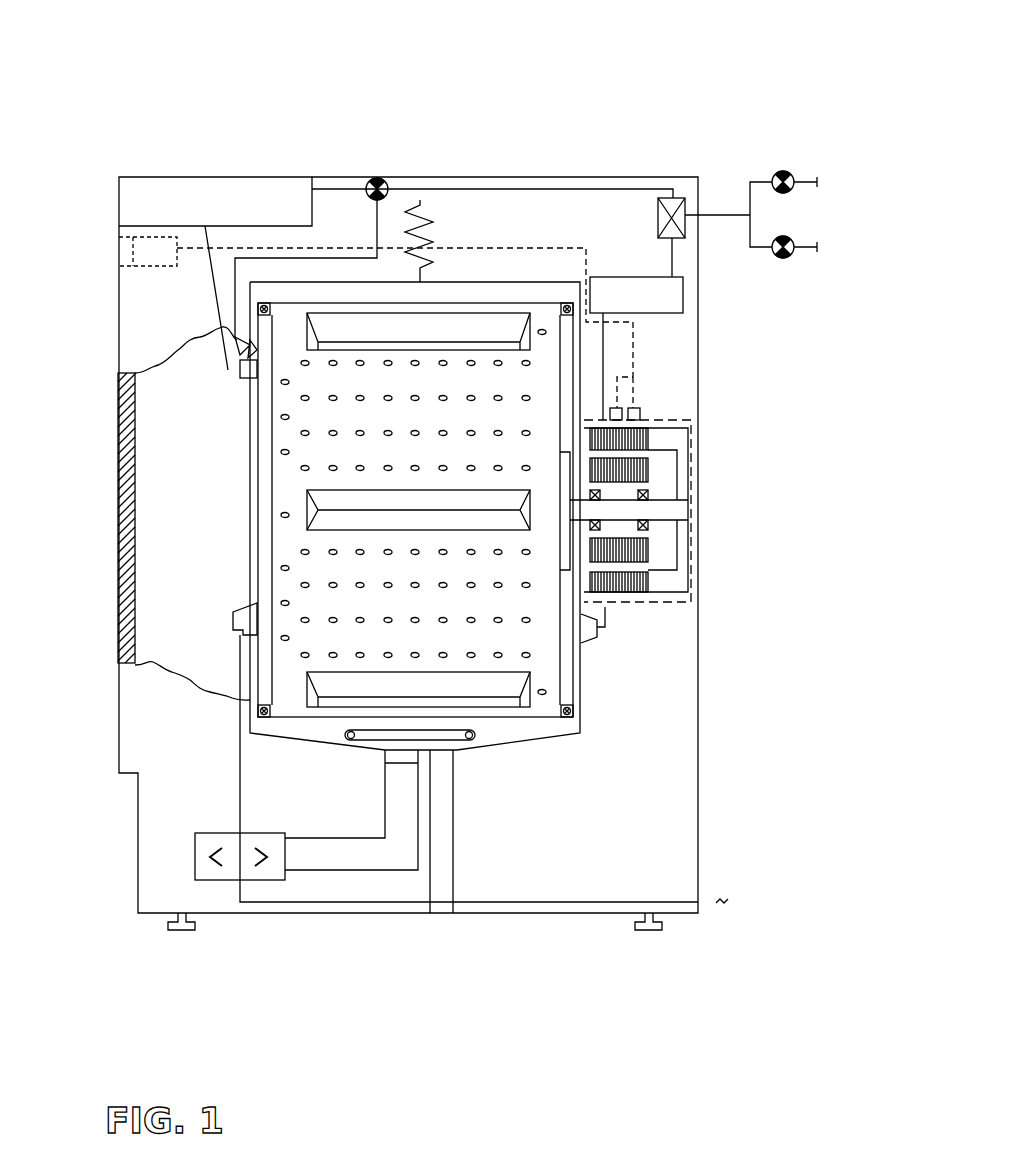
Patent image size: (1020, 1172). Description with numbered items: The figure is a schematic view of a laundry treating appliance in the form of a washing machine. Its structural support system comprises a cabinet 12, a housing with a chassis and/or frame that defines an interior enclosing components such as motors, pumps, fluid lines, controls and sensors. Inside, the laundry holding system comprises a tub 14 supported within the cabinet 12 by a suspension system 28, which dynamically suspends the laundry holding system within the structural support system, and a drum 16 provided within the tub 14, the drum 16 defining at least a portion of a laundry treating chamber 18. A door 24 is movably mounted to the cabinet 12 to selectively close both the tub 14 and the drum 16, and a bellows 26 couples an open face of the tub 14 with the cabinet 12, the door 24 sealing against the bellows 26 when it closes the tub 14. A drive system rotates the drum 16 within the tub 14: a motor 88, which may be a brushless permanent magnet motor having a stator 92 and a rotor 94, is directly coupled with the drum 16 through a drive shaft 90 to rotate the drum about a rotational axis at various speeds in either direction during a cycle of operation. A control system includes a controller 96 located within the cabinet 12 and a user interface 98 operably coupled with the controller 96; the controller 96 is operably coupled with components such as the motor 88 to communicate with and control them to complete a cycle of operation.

The cabinet 12 is at (609, 178).
The tub 14 is at (415, 408).
The drum 16 is at (340, 300).
The laundry treating chamber 18 is at (412, 429).
The door 24 is at (118, 500).
The bellows 26 is at (157, 672).
The suspension system 28 is at (398, 215).
The motor 88 is at (674, 499).
The drive shaft 90 is at (660, 513).
The stator 92 is at (682, 473).
The rotor 94 is at (645, 468).
The controller 96 is at (160, 270).
The user interface 98 is at (116, 248).